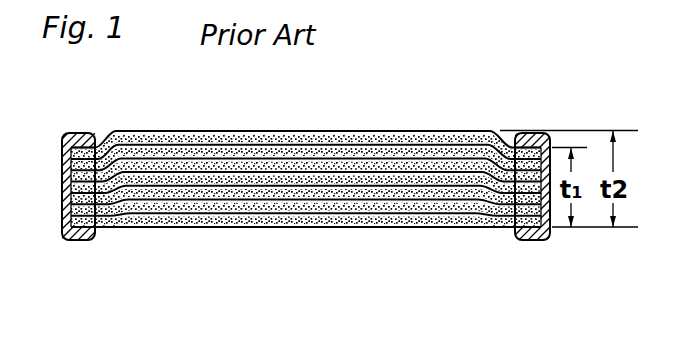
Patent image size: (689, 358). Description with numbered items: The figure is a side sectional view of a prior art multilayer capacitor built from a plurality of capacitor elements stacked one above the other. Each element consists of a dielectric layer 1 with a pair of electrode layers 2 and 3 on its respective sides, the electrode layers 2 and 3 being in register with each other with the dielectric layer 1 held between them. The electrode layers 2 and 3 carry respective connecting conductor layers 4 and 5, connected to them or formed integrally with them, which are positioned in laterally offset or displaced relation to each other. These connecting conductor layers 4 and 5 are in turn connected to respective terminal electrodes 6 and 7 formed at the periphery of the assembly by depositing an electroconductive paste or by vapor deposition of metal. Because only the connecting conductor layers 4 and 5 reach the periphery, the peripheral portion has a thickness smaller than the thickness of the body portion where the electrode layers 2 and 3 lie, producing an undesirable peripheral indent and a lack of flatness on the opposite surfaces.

The dielectric layer 1 is at (414, 220).
The electrode layer 2 is at (327, 213).
The electrode layer 3 is at (262, 200).
The connecting conductor layer 4 is at (505, 215).
The connecting conductor layer 5 is at (101, 228).
The terminal electrode 6 is at (542, 240).
The terminal electrode 7 is at (69, 240).